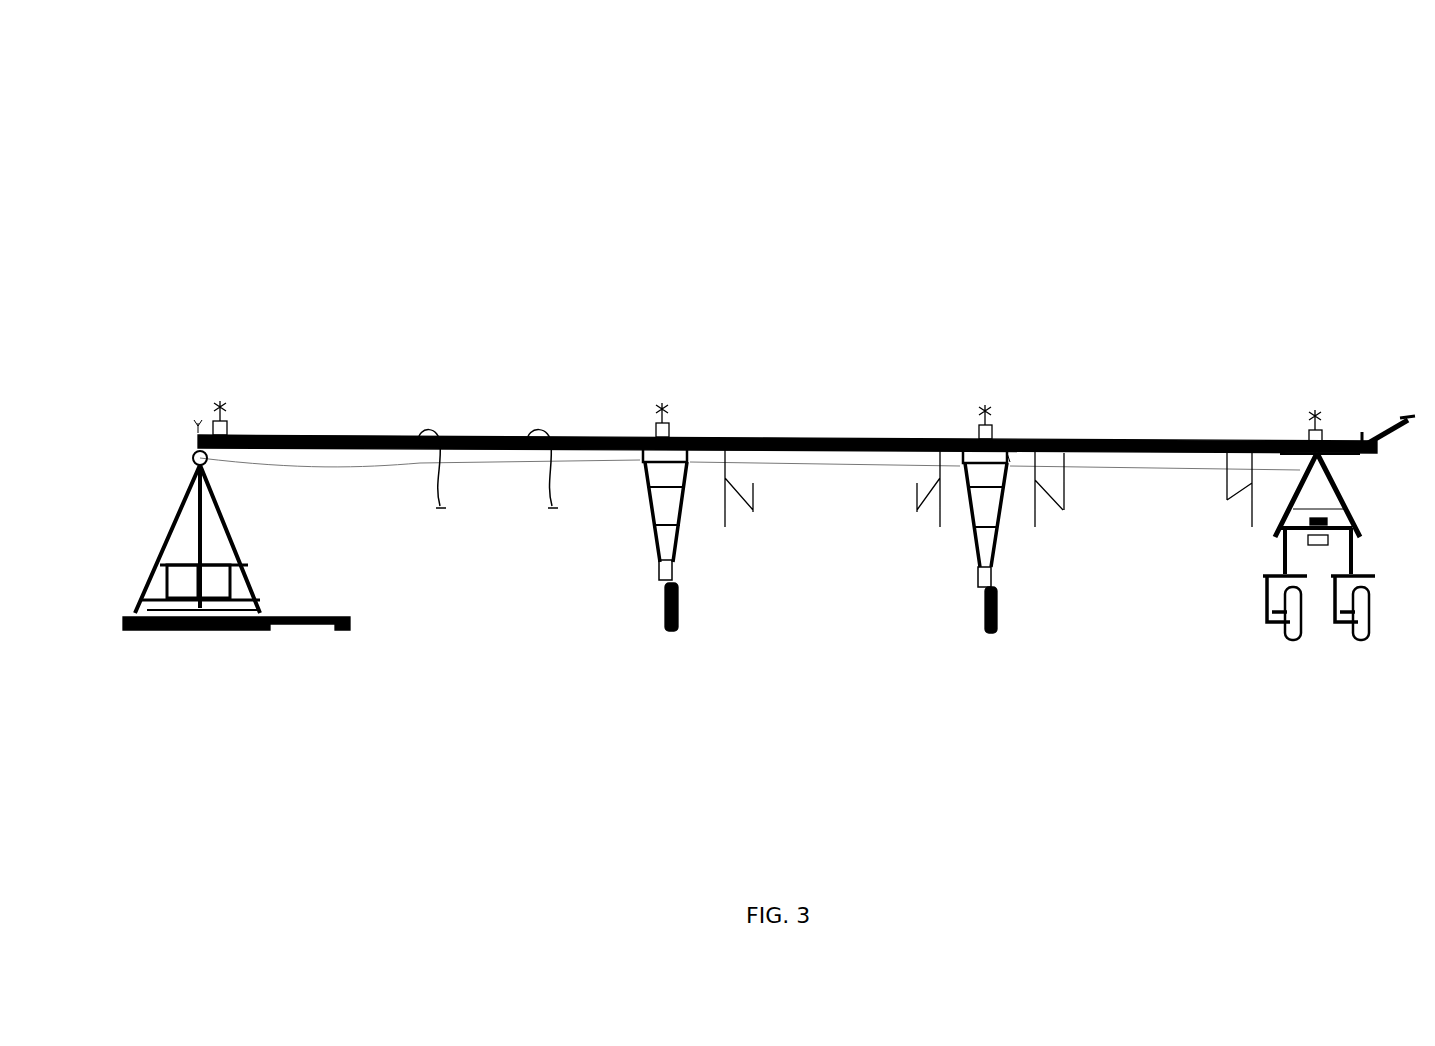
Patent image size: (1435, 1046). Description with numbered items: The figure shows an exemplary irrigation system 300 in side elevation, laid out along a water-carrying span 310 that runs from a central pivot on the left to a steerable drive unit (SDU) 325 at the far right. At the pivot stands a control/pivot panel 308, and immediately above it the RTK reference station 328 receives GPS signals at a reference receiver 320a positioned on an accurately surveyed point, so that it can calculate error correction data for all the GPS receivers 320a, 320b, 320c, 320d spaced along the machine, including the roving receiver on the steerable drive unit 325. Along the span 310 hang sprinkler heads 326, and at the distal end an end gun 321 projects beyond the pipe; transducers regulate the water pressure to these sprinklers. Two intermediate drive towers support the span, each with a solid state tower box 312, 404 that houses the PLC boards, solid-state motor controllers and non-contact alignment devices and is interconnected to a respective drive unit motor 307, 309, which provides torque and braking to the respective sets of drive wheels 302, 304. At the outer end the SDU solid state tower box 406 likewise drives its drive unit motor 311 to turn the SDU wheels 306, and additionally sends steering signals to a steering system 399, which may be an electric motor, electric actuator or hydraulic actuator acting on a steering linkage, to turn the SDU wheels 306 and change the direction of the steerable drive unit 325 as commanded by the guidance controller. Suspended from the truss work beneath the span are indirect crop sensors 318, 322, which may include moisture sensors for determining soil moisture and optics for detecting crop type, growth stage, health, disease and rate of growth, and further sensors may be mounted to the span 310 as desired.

The irrigation system 300 is at (824, 76).
The drive wheels 302 is at (708, 587).
The drive wheels 304 is at (1022, 588).
The SDU wheels 306 is at (1306, 590).
The drive unit motor 307 is at (673, 572).
The control/pivot panel 308 is at (225, 565).
The drive unit motor 309 is at (992, 572).
The span 310 is at (455, 437).
The drive unit motor 311 is at (1340, 597).
The solid state tower box 312 is at (690, 450).
The indirect crop sensor 318 is at (917, 510).
The GPS receiver 320a is at (210, 422).
The GPS receiver 320b is at (653, 425).
The GPS receiver 320c is at (978, 430).
The GPS receiver 320d is at (1327, 405).
The end gun 321 is at (1402, 418).
The indirect crop sensor 322 is at (1227, 500).
The steerable drive unit 325 is at (1287, 458).
The sprinkler heads 326 is at (552, 508).
The RTK reference station 328 is at (232, 411).
The steering system 399 is at (1282, 532).
The solid state tower box 404 is at (1008, 445).
The SDU solid state tower box 406 is at (1357, 520).